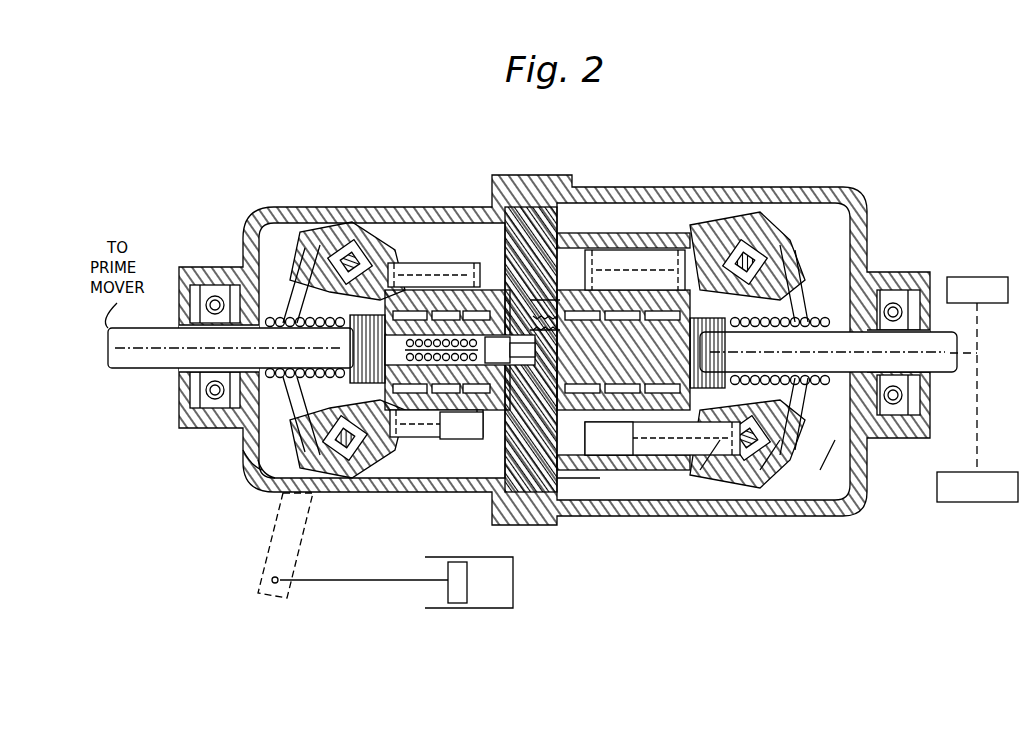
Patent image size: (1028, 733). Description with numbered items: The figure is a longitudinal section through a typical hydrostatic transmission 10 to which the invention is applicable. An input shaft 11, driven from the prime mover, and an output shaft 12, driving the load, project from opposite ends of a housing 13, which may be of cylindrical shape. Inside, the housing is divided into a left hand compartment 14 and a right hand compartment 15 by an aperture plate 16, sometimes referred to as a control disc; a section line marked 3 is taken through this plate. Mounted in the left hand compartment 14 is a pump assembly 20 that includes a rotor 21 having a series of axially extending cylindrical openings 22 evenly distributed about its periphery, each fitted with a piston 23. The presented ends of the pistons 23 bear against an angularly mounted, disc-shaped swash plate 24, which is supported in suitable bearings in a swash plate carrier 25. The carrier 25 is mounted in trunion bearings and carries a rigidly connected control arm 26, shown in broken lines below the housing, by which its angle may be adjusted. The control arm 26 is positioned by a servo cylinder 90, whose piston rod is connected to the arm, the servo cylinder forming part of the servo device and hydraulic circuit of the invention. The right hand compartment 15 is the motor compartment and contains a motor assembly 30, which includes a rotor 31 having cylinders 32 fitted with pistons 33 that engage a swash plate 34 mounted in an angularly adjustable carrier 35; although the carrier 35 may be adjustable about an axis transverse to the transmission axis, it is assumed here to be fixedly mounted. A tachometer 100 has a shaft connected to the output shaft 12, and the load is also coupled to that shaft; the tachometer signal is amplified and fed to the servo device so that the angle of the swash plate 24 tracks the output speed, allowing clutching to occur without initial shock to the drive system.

The section line 3- 3 is at (518, 163).
The hydrostatic transmission 10 is at (652, 600).
The input shaft 11 is at (150, 370).
The output shaft 12 is at (940, 380).
The housing 13 is at (440, 203).
The left hand compartment 14 is at (292, 255).
The right hand compartment 15 is at (834, 248).
The aperture plate 16 is at (527, 175).
The pump assembly 20 is at (420, 460).
The rotor 21 is at (372, 470).
The cylindrical openings 22 is at (450, 455).
The pistons 23 is at (358, 480).
The swash plate 24 is at (270, 480).
The swash plate carrier 25 is at (245, 455).
The control arm 26 is at (275, 552).
The motor assembly 30 is at (652, 478).
The rotor 31 is at (600, 460).
The cylinders 32 is at (578, 493).
The pistons 33 is at (708, 492).
The swash plate 34 is at (770, 470).
The carrier 35 is at (835, 492).
The servo cylinder 90 is at (485, 608).
The tachometer 100 is at (965, 277).